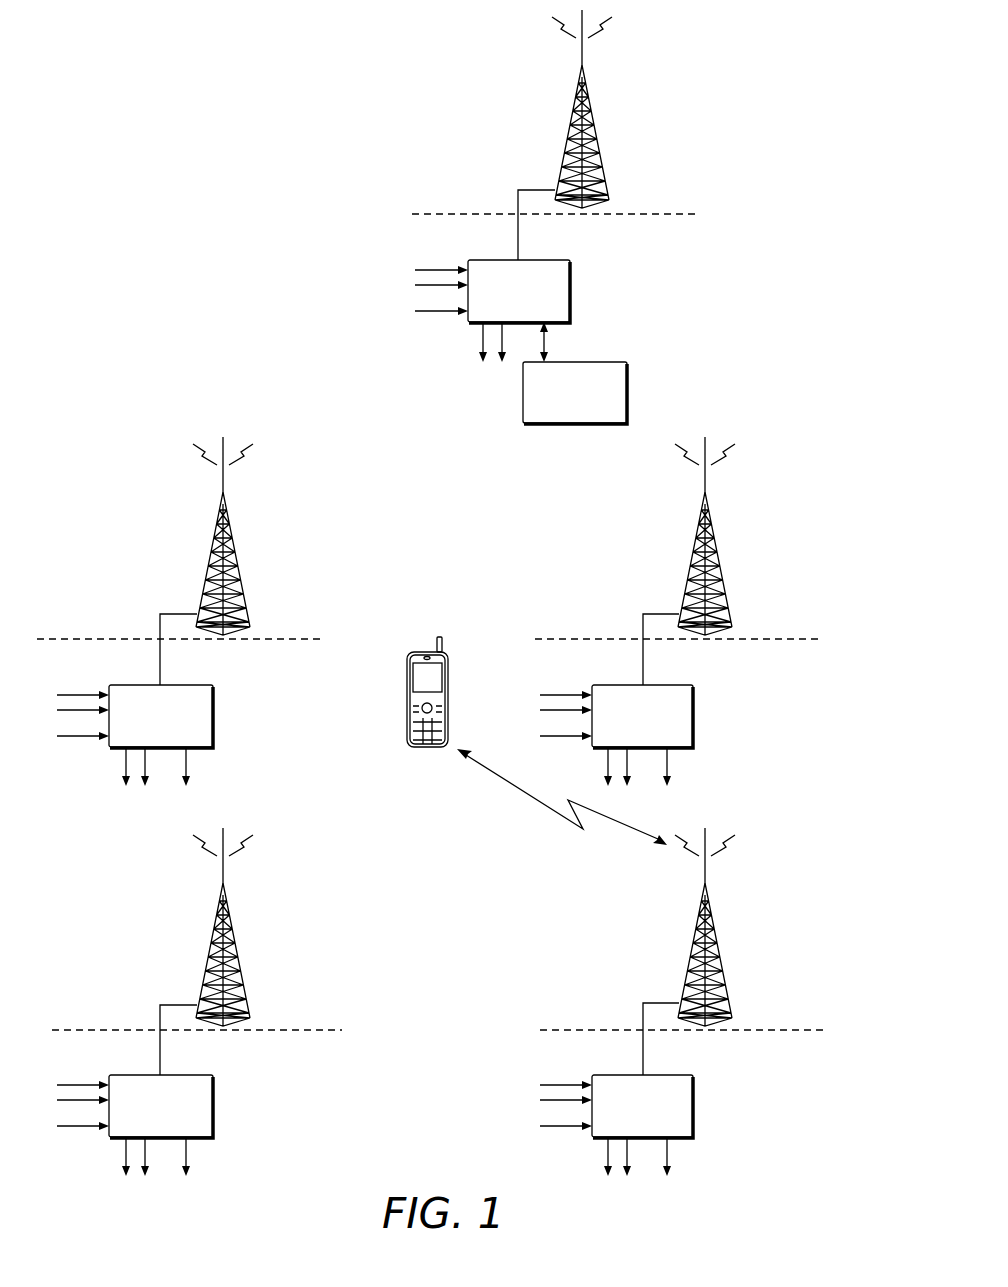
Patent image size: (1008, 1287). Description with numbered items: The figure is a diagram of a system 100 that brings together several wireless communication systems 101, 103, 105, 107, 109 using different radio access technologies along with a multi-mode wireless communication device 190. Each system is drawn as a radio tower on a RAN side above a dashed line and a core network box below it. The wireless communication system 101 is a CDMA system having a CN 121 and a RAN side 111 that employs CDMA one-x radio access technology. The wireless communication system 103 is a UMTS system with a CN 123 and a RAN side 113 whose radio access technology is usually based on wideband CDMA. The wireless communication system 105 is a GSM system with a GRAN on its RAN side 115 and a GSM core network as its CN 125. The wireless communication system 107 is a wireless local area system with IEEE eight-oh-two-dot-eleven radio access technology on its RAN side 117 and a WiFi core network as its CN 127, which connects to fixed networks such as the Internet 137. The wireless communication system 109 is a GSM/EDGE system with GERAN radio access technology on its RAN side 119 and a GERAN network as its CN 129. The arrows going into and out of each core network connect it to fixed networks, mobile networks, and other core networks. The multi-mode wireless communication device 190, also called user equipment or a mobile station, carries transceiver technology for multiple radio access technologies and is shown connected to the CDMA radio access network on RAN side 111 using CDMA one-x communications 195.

The system 100 is at (131, 31).
The wireless communication system 101 is at (751, 838).
The wireless communication system 103 is at (272, 838).
The wireless communication system 105 is at (272, 447).
The wireless communication system 107 is at (628, 24).
The wireless communication system 109 is at (751, 447).
The RAN side 111 is at (584, 978).
The RAN side 113 is at (107, 978).
The RAN side 115 is at (107, 588).
The RAN side 117 is at (467, 165).
The RAN side 119 is at (581, 588).
The CN 121 is at (680, 1076).
The CN 123 is at (200, 1076).
The CN 125 is at (200, 686).
The CN 127 is at (558, 260).
The CN 129 is at (681, 686).
The Internet 137 is at (614, 362).
The multi-mode wireless communication device 190 is at (422, 652).
The CDMA 1x communications 195 is at (614, 826).